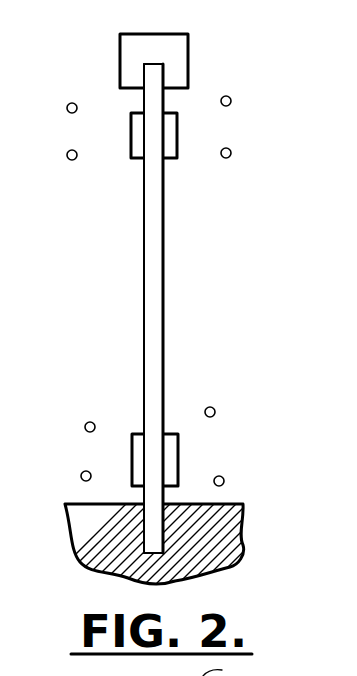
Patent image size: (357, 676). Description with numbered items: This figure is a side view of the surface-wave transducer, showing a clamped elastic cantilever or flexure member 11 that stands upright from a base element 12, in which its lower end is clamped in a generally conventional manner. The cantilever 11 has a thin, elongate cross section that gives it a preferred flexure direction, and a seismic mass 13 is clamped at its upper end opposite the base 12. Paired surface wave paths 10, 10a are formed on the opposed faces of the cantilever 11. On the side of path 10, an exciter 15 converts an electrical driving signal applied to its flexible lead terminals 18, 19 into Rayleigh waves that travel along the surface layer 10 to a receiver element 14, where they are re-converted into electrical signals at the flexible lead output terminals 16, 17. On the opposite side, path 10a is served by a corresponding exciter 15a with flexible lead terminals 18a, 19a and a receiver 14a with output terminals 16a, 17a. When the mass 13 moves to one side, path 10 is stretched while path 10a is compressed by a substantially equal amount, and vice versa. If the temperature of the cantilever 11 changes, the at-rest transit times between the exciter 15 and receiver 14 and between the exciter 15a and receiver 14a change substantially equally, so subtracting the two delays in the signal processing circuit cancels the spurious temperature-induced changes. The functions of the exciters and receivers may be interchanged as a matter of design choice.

The boundary surface 10 is at (164, 320).
The surface wave path 10a is at (144, 307).
The cantilever flexure member 11 is at (173, 260).
The base element 12 is at (243, 530).
The seismic mass 13 is at (188, 55).
The receiver element 14 is at (178, 452).
The receiver 14a is at (132, 458).
The exciter 15 is at (178, 131).
The exciter 15a is at (131, 135).
The flexible lead output terminal 16 is at (178, 463).
The flexible lead output terminal 16a is at (132, 474).
The flexible lead output terminal 17 is at (178, 440).
The flexible lead output terminal 17a is at (132, 441).
The flexible lead terminal 18 is at (178, 140).
The flexible lead terminal 18a is at (131, 146).
The flexible lead terminal 19 is at (178, 117).
The flexible lead terminal 19a is at (131, 122).